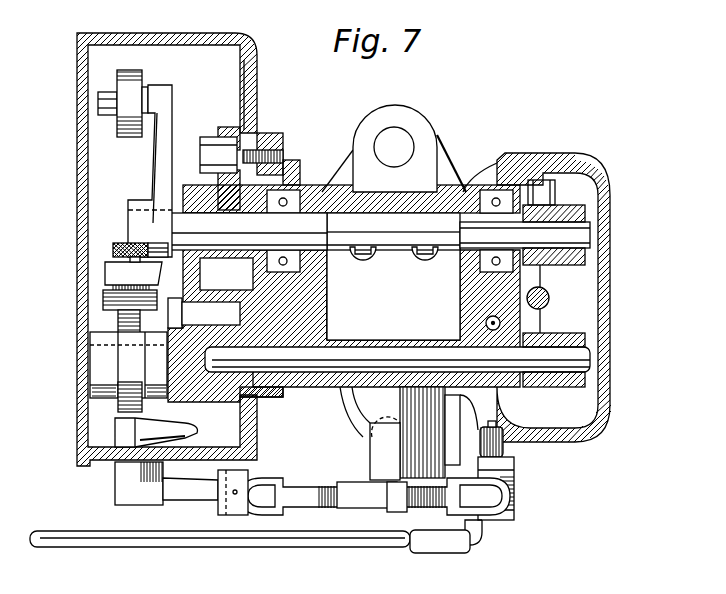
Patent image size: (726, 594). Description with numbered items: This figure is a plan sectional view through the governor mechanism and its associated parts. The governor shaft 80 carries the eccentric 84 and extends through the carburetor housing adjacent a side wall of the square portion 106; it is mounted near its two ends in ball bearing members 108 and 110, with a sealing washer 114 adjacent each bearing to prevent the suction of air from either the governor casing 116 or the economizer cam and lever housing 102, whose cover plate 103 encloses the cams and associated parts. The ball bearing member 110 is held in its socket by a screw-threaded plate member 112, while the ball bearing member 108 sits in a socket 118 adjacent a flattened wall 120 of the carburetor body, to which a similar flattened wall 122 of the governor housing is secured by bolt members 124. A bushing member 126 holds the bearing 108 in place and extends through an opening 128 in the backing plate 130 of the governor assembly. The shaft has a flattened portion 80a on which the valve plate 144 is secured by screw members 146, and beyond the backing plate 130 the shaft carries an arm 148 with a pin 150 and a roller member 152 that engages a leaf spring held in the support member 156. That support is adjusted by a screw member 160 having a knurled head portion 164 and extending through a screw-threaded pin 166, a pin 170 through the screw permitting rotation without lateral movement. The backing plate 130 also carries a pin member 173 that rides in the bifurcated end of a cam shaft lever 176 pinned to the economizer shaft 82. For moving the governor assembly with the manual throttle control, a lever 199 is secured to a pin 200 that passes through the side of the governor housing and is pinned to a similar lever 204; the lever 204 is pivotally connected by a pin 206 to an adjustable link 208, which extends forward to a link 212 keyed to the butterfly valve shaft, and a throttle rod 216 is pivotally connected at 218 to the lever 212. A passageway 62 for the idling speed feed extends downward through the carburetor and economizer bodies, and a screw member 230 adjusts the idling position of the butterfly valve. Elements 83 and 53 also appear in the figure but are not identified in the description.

The governor casing 116 is at (255, 64).
The backing plate 130 is at (257, 95).
The bolt members 124 is at (262, 122).
The bushing member 126 is at (229, 166).
The socket 118 is at (290, 168).
The square portion 106 is at (327, 298).
The flattened wall 122 is at (327, 318).
The flattened wall 120 is at (327, 336).
The governor shaft 80 is at (408, 234).
The flattened portion 80a is at (400, 232).
The ball bearing member 108 is at (346, 192).
The sealing washer 114 is at (440, 196).
The valve plate 144 is at (426, 258).
The ball bearing member 110 is at (480, 192).
The plate member 112 is at (540, 180).
The cover plate 103 is at (608, 308).
The opening 128 is at (370, 231).
The economizer shaft 82 is at (428, 356).
The passageway 62 is at (486, 321).
The screw members 146 is at (361, 247).
The eccentric 84 is at (587, 254).
The bearing 83 is at (590, 347).
The pin 53 is at (550, 298).
The pin 150 is at (106, 98).
The roller member 152 is at (120, 128).
The arm 148 is at (150, 172).
The knurled head portion 164 is at (113, 249).
The pin 170 is at (110, 284).
The pin member 173 is at (205, 310).
The screw member 160 is at (113, 329).
The support member 156 is at (100, 364).
The screw-threaded pin 166 is at (100, 395).
The pin 200 is at (115, 418).
The cam shaft lever 176 is at (253, 390).
The lever 199 is at (252, 424).
The cam and lever housing 102 is at (528, 436).
The screw member 230 is at (506, 457).
The link 212 is at (518, 500).
The adjustable link 208 is at (352, 487).
The throttle rod 216 is at (152, 547).
The pivotal connection 218 is at (480, 532).
The lever 204 is at (183, 492).
The pin 206 is at (236, 516).